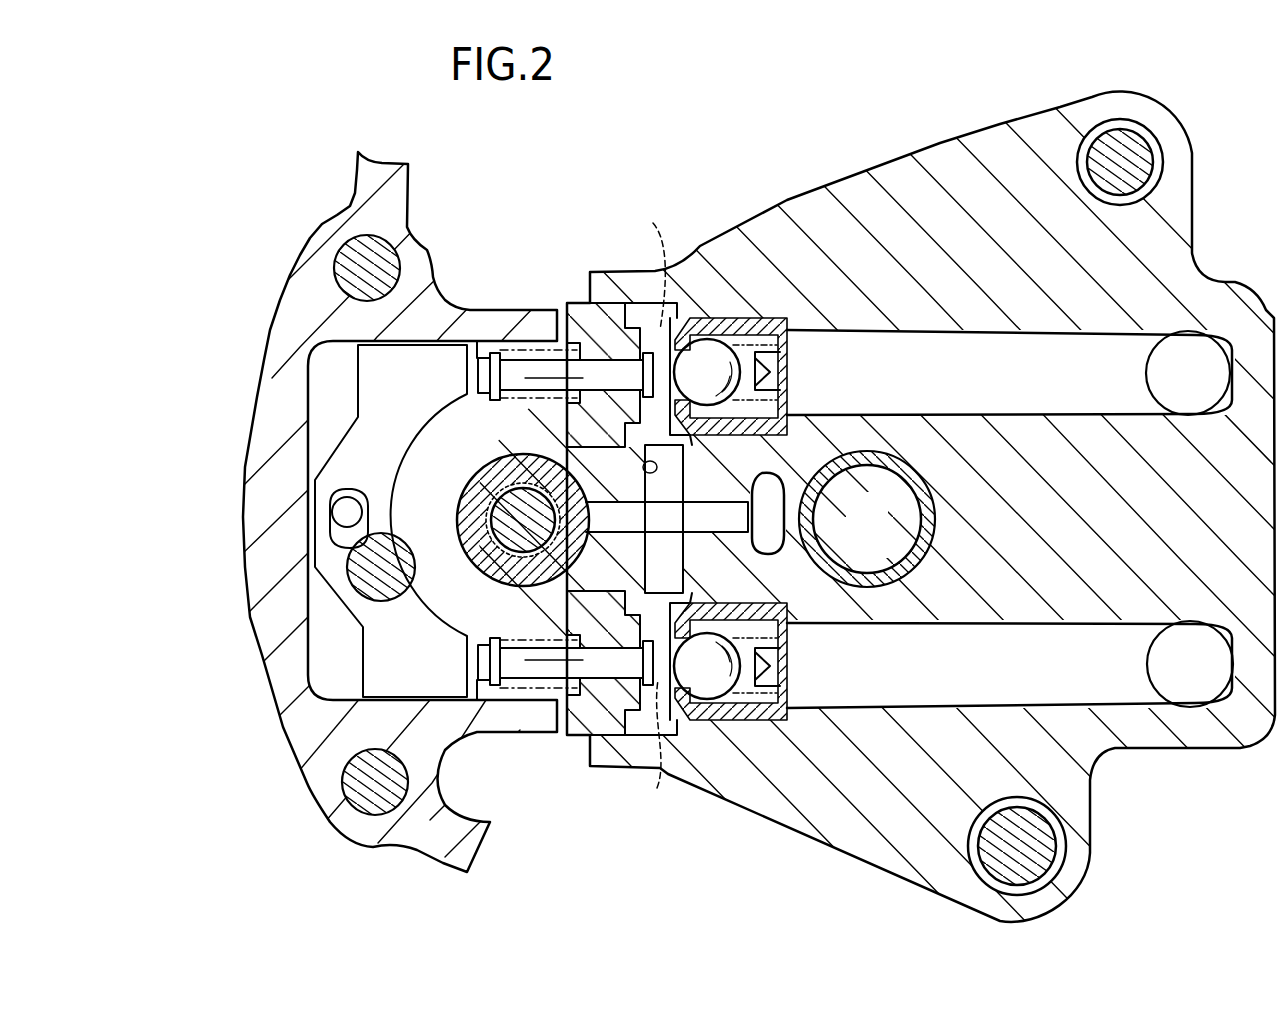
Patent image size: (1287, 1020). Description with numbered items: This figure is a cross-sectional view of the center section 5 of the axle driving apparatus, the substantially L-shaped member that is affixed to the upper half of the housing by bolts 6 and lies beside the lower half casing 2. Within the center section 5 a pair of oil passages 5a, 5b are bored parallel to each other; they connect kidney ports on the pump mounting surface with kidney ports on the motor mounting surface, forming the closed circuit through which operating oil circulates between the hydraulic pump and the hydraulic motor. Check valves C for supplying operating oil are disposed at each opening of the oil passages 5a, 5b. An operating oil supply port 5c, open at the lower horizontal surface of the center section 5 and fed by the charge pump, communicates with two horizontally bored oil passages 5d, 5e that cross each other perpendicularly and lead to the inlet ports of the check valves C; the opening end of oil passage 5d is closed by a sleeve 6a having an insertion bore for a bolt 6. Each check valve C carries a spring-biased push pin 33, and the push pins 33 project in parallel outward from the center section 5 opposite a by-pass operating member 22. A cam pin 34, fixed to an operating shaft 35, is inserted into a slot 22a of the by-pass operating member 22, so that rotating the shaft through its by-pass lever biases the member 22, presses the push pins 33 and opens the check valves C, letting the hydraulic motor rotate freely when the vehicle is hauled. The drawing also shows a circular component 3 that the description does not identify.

The lower half casing 2 is at (290, 735).
The disc rotor 3 is at (854, 547).
The center section 5 is at (857, 180).
The oil passage 5a is at (996, 331).
The oil passage 5b is at (960, 630).
The operating oil supply port 5c is at (780, 472).
The oil passage 5d is at (605, 532).
The oil passage 5e is at (644, 462).
The bolt 6 is at (1148, 172).
The sleeve 6a is at (500, 578).
The by-pass operating member 22 is at (372, 386).
The slot 22a is at (330, 500).
The push pin 33 is at (482, 335).
The cam pin 34 is at (345, 518).
The operating shaft 35 is at (352, 595).
The check valve C is at (648, 506).